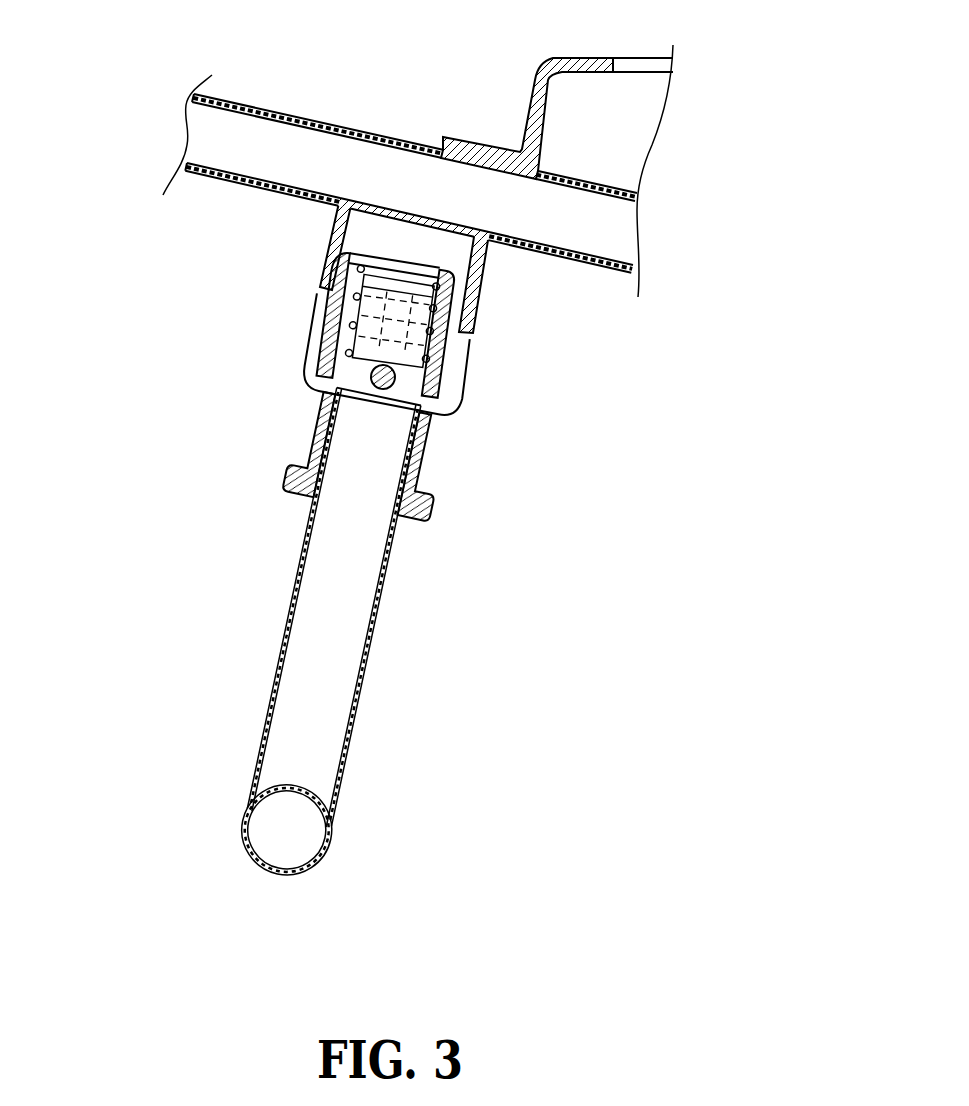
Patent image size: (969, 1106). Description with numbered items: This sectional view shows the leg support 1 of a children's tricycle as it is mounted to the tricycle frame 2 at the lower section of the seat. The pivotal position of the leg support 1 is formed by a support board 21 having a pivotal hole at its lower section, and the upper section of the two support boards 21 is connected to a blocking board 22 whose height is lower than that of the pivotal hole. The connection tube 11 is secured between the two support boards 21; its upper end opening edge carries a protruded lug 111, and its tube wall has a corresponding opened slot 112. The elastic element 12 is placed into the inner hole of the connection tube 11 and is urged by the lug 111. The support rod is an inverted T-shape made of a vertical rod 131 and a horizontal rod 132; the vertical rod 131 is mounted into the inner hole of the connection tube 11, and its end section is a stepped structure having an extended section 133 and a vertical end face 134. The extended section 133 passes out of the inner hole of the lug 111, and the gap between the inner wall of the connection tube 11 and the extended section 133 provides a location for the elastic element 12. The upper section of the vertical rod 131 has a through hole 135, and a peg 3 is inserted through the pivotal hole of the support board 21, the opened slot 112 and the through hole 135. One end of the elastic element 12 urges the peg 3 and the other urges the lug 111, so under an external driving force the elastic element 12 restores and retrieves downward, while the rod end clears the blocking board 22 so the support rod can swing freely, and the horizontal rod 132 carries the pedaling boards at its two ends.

The leg support 1 is at (231, 703).
The connection tube 11 is at (418, 489).
The lug 111 is at (443, 272).
The opened slot 112 is at (473, 327).
The elastic element 12 is at (447, 303).
The vertical rod 131 is at (372, 625).
The horizontal rod 132 is at (332, 848).
The extended section 133 is at (330, 325).
The vertical end face 134 is at (408, 414).
The through hole 135 is at (412, 383).
The tricycle frame 2 is at (274, 111).
The support board 21 is at (451, 367).
The blocking board 22 is at (328, 254).
The peg 3 is at (336, 380).